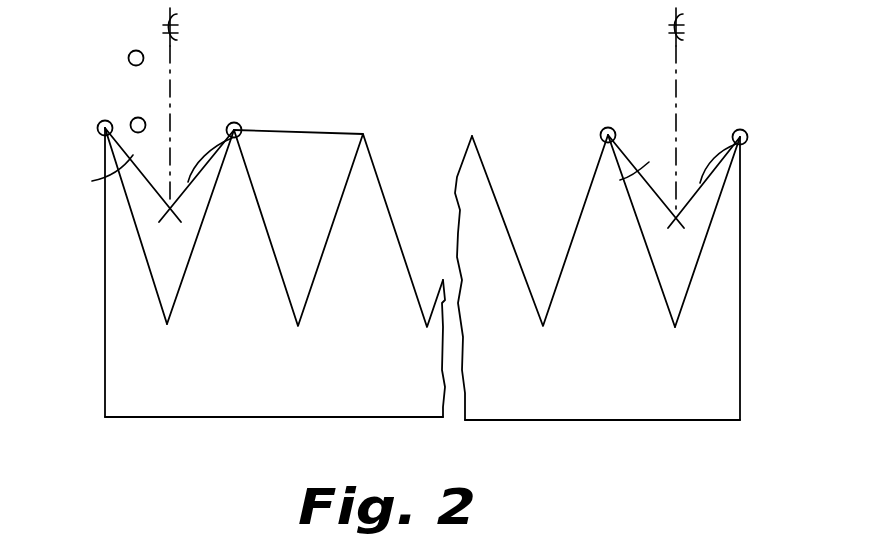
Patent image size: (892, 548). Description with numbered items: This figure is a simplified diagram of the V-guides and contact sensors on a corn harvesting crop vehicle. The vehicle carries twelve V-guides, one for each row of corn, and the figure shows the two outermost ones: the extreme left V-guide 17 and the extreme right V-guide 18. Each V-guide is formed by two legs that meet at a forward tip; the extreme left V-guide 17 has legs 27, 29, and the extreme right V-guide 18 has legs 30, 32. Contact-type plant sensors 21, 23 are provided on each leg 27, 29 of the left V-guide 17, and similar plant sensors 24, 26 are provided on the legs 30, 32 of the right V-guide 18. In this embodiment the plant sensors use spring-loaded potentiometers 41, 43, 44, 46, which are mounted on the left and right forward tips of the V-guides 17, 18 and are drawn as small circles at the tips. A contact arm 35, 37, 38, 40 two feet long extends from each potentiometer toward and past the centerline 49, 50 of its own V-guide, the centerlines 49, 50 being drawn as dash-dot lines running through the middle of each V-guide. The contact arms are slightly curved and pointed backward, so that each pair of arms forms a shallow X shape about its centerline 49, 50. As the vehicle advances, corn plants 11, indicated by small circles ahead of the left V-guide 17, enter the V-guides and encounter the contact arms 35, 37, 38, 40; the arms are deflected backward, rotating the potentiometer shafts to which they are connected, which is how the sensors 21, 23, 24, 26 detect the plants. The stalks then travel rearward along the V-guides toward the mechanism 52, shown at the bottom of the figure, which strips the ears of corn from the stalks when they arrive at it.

The corn plants 11 is at (131, 53).
The extreme left V-guide 17 is at (118, 268).
The extreme right V-guide 18 is at (709, 285).
The contact-type plant sensor 21 is at (126, 105).
The contact-type plant sensor 23 is at (205, 124).
The plant sensor 24 is at (634, 126).
The plant sensor 26 is at (717, 126).
The leg 27 is at (137, 234).
The leg 29 is at (199, 252).
The leg 30 is at (646, 249).
The leg 32 is at (702, 258).
The contact arm 35 is at (92, 181).
The contact arm 37 is at (197, 170).
The contact arm 38 is at (627, 179).
The contact arm 40 is at (703, 171).
The spring-loaded potentiometer 41 is at (99, 124).
The spring-loaded potentiometer 43 is at (240, 126).
The spring-loaded potentiometer 44 is at (602, 128).
The spring-loaded potentiometer 46 is at (746, 131).
The centerline 49 is at (172, 63).
The centerline 50 is at (678, 66).
The mechanism 52 is at (549, 421).